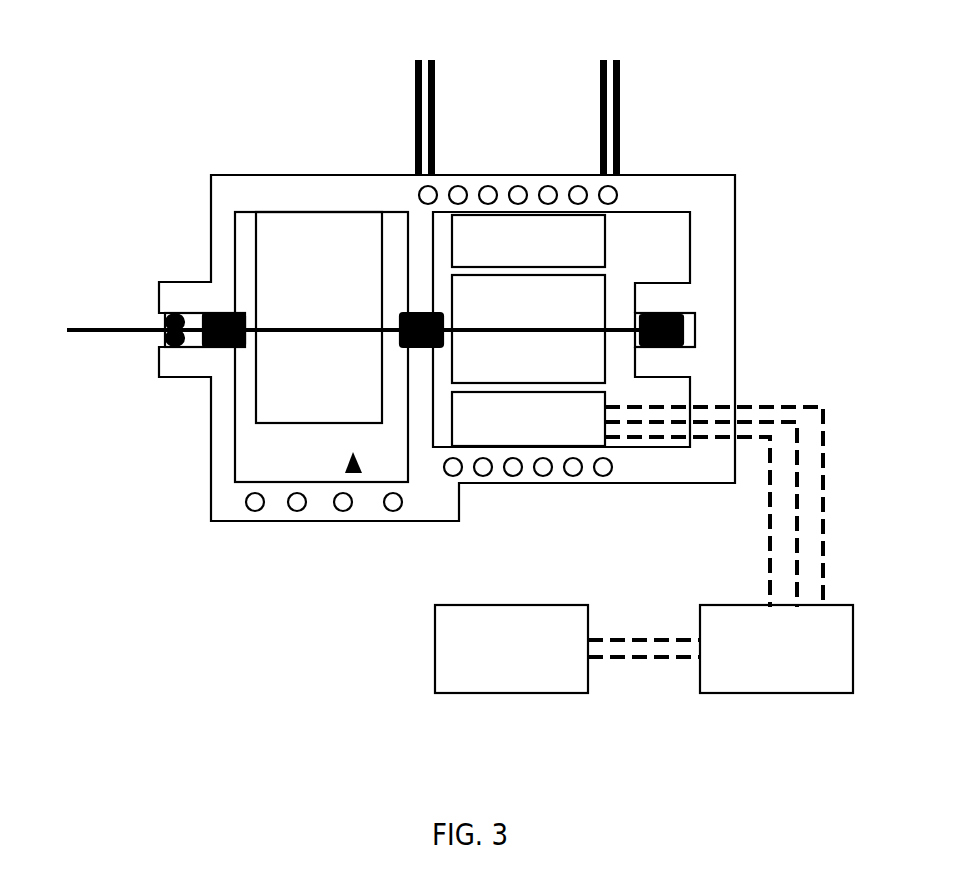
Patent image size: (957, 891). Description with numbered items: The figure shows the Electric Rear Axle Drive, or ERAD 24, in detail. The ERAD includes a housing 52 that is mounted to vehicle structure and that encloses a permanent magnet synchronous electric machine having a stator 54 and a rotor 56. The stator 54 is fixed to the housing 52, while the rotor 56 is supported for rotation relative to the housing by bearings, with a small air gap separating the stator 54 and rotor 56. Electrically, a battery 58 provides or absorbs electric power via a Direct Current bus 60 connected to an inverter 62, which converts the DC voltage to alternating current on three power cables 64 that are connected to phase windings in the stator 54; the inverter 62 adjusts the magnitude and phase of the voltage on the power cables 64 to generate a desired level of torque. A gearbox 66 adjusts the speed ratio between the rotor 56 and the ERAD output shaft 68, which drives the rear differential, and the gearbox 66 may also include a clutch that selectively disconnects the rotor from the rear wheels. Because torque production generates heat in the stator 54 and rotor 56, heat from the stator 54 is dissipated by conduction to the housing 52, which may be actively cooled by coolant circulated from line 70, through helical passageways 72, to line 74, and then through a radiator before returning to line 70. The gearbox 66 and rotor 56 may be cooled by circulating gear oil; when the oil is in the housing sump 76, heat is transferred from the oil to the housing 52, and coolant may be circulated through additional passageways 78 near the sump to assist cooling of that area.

The Electric Rear Axle Drive (ERAD) 24 is at (288, 107).
The housing 52 is at (735, 243).
The stator 54 is at (605, 237).
The rotor 56 is at (451, 299).
The battery 58 is at (435, 638).
The Direct Current (DC) bus 60 is at (643, 638).
The inverter 62 is at (733, 605).
The power cables 64 is at (767, 418).
The gearbox 66 is at (304, 425).
The ERAD output shaft 68 is at (113, 332).
The line 70 is at (415, 120).
The helical passageways 72 is at (603, 476).
The line 74 is at (600, 108).
The housing sump 76 is at (352, 472).
The additional passageways 78 is at (395, 512).